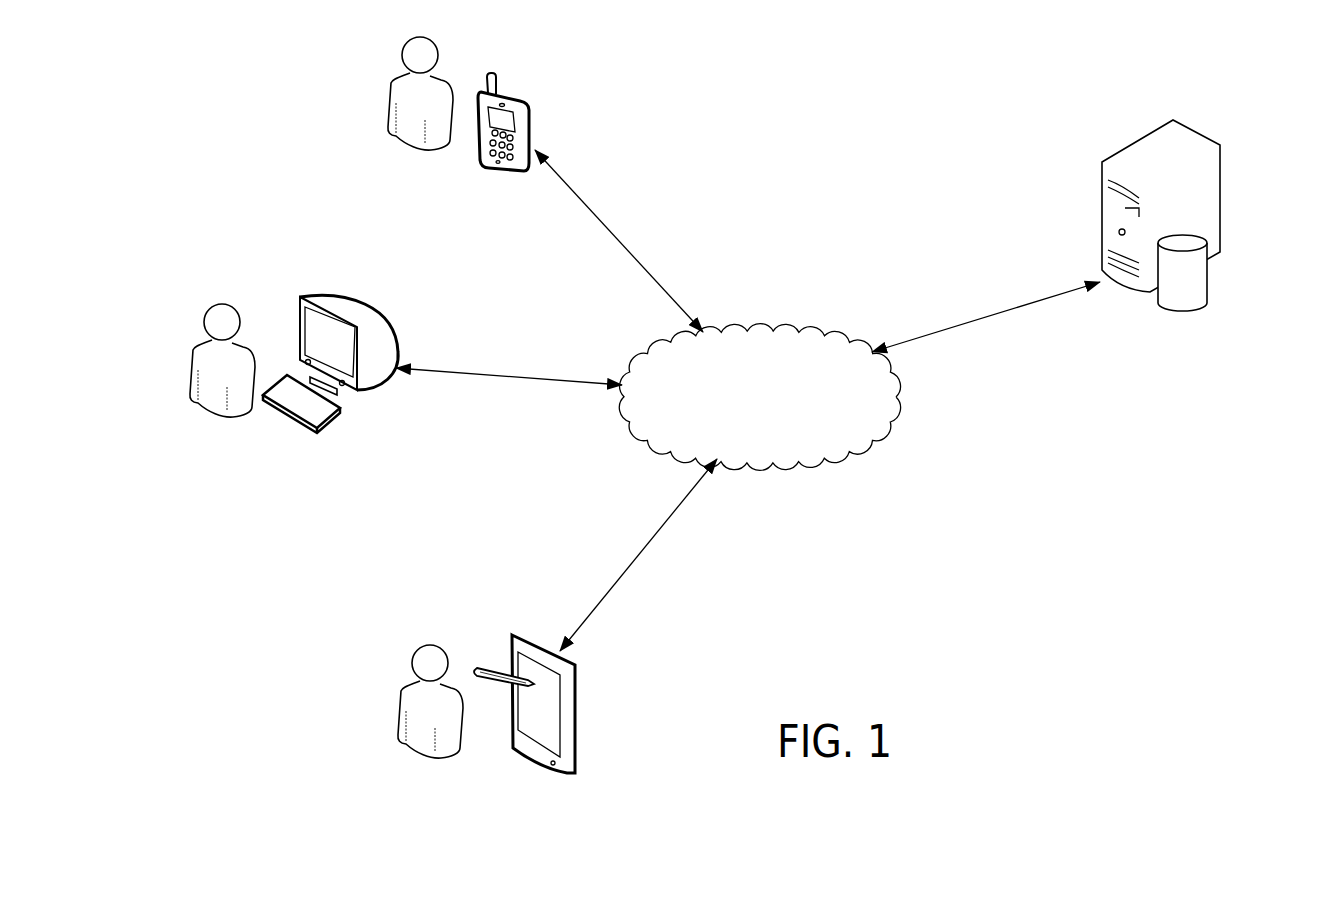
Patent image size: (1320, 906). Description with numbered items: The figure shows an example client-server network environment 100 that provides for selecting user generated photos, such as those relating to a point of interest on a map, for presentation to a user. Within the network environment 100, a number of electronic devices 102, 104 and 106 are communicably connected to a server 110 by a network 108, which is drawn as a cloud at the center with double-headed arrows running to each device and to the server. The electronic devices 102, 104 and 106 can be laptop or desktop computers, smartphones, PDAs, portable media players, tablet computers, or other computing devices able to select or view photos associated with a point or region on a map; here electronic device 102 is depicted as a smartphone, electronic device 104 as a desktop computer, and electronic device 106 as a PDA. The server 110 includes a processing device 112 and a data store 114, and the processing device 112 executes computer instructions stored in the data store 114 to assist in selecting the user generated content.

The network environment 100 is at (876, 86).
The electronic device 102 is at (513, 95).
The electronic device 104 is at (365, 305).
The electronic device 106 is at (522, 635).
The network 108 is at (760, 330).
The server 110 is at (1172, 207).
The processing device 112 is at (1197, 130).
The data store 114 is at (1208, 290).